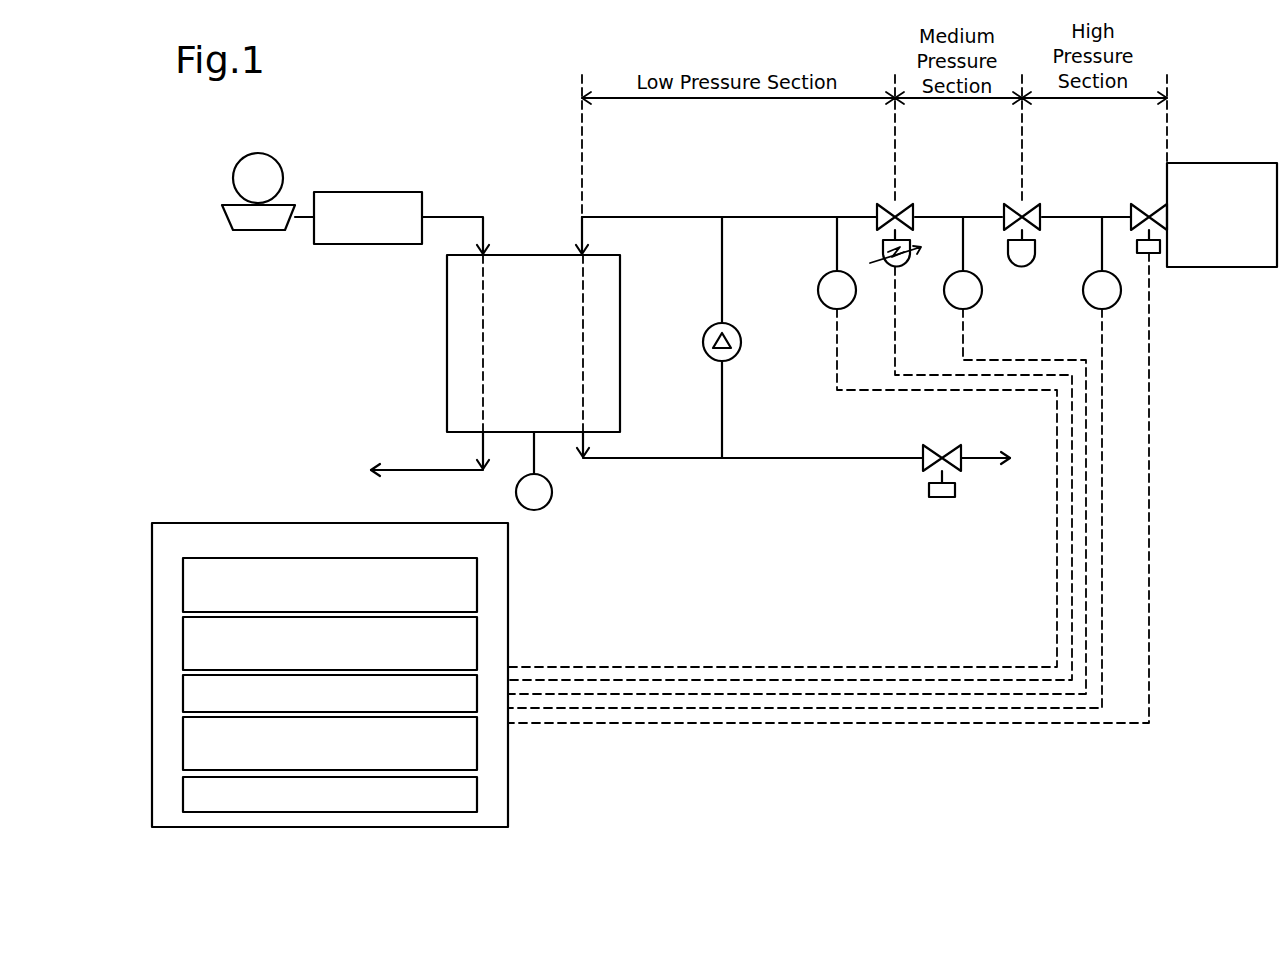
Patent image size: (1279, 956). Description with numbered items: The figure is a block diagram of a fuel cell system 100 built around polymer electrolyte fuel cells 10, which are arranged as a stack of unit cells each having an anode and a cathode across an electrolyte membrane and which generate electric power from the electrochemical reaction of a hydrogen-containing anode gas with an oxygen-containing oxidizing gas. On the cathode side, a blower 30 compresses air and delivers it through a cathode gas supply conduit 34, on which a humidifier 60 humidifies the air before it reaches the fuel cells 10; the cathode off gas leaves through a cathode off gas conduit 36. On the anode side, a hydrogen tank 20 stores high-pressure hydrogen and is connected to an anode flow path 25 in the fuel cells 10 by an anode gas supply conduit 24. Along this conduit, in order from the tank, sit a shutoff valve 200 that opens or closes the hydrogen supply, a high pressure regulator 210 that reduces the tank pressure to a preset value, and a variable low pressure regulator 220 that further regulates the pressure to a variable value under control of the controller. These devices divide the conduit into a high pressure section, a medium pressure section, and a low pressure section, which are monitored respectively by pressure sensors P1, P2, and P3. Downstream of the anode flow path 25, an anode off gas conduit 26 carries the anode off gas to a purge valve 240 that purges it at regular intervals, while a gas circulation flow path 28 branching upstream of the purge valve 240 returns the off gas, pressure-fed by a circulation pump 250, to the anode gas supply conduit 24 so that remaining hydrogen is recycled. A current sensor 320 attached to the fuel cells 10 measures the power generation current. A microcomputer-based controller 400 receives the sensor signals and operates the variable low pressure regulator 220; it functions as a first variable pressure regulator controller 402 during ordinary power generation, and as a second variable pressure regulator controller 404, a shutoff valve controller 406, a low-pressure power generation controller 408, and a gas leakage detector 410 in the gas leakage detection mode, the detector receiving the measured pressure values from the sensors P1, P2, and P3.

The blower 30 is at (262, 154).
The humidifier 60 is at (408, 192).
The cathode gas supply conduit 34 is at (447, 215).
The fuel cells 10 is at (533, 253).
The anode flow path 25 is at (583, 275).
The anode gas supply conduit 24 is at (780, 215).
The gas circulation flow path 28 is at (722, 258).
The circulation pump 250 is at (737, 329).
The pressure sensor P3 is at (826, 306).
The variable low pressure regulator 220 is at (902, 210).
The pressure sensor P2 is at (952, 306).
The high pressure regulator 210 is at (1030, 210).
The pressure sensor P1 is at (1113, 306).
The shutoff valve 200 is at (1125, 210).
The hydrogen tank 20 is at (1230, 163).
The anode off gas conduit 26 is at (780, 460).
The purge valve 240 is at (945, 450).
The current sensor 320 is at (552, 489).
The cathode off gas conduit 36 is at (408, 472).
The controller 400 is at (187, 523).
The first variable pressure regulator controller 402 is at (477, 587).
The second variable pressure regulator controller 404 is at (477, 642).
The shutoff valve controller 406 is at (477, 695).
The low-pressure power generation controller 408 is at (477, 743).
The gas leakage detector 410 is at (477, 795).
The fuel cell system 100 is at (1213, 707).